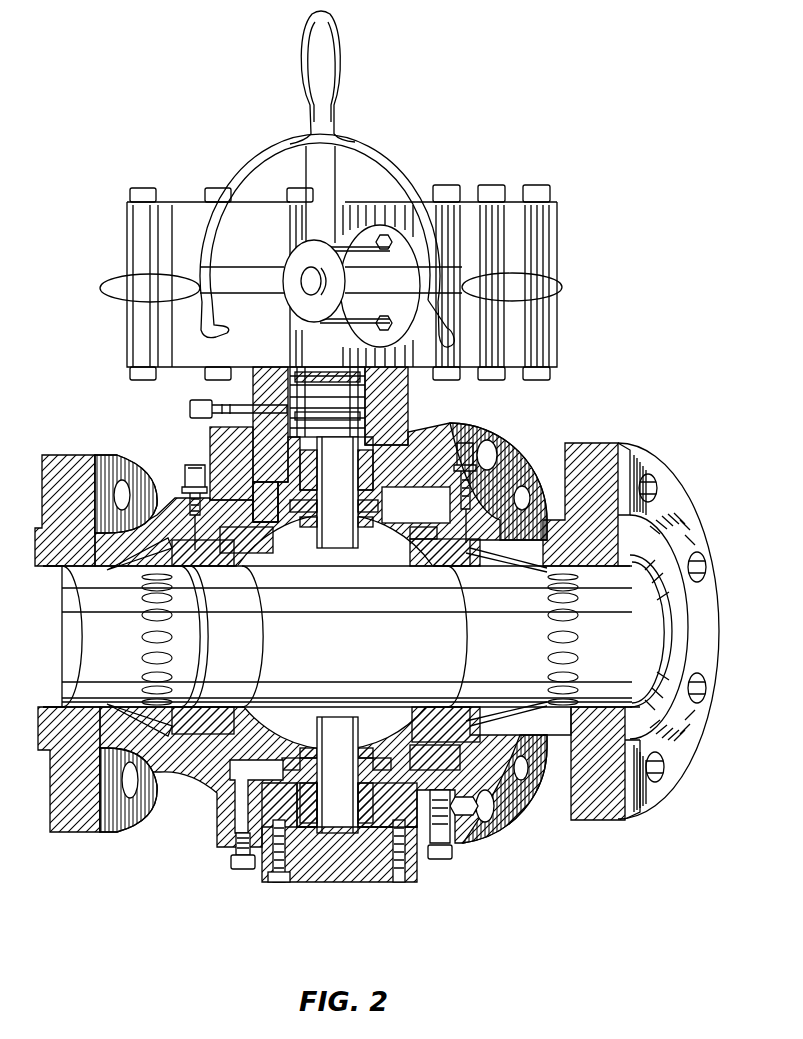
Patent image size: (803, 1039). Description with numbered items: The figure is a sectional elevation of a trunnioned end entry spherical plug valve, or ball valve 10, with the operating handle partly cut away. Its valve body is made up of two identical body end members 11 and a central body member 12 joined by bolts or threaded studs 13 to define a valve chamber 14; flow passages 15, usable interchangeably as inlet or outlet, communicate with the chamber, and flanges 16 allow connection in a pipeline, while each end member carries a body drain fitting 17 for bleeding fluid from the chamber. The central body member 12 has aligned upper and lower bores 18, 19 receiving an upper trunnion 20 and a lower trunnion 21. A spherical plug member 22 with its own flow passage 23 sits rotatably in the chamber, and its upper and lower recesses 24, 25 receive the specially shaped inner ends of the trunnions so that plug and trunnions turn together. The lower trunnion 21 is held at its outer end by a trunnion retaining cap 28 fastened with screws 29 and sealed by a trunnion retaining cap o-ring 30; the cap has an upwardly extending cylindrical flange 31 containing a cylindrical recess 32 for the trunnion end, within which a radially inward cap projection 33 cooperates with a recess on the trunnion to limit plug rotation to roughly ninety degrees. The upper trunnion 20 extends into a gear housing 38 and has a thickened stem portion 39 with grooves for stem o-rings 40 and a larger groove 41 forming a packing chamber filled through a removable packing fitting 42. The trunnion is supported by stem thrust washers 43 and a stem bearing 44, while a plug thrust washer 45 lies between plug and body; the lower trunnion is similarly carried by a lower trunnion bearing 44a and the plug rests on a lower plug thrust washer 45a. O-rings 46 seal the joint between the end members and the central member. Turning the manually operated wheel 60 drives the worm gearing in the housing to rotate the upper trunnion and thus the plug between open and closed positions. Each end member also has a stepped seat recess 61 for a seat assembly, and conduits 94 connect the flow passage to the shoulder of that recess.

The ball valve 10 is at (514, 428).
The body end members 11 is at (80, 554).
The central body member 12 is at (436, 401).
The bolts or threaded studs 13 is at (505, 820).
The valve chamber 14 is at (265, 535).
The flow passages 15 is at (126, 651).
The flanges 16 is at (78, 472).
The body drain fitting 17 is at (249, 872).
The upper bore 18 is at (343, 498).
The lower bore 19 is at (360, 746).
The upper trunnion 20 is at (352, 534).
The lower trunnion 21 is at (350, 784).
The spherical plug member 22 is at (410, 563).
The flow passage 23 is at (368, 650).
The upper recess 24 is at (307, 566).
The lower recess 25 is at (392, 716).
The trunnion retaining cap 28 is at (374, 878).
The screws 29 is at (275, 889).
The trunnion retaining cap o-ring 30 is at (295, 888).
The cylindrical flange 31 is at (397, 884).
The cylindrical recess 32 is at (322, 886).
The cap projection 33 is at (370, 880).
The gear housing 38 is at (187, 207).
The stem portion 39 is at (396, 395).
The stem o-rings 40 is at (262, 400).
The groove 41 is at (396, 412).
The packing fitting 42 is at (188, 409).
The stem thrust washers 43 is at (393, 374).
The stem bearing 44 is at (302, 468).
The lower trunnion bearing 44a is at (306, 811).
The plug thrust washer 45 is at (388, 560).
The lower plug thrust washer 45a is at (326, 714).
The o-rings 46 is at (262, 495).
The wheel 60 is at (323, 58).
The stepped seat recess 61 is at (451, 530).
The conduits 94 is at (556, 594).